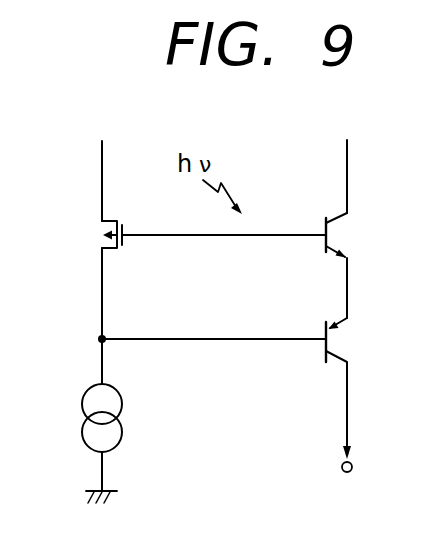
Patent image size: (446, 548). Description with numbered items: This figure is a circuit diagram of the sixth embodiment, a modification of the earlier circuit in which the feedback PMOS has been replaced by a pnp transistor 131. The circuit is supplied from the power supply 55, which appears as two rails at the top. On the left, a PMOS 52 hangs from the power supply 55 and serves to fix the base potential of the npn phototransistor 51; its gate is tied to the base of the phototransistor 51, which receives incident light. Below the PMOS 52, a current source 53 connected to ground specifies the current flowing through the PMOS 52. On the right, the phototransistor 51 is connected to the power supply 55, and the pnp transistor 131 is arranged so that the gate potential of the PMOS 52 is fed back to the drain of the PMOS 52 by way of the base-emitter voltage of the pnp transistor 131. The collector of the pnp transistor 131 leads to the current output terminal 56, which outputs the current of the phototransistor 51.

The power supply 55 is at (114, 141).
The PMOS 52 is at (95, 218).
The current source 53 is at (88, 388).
The npn phototransistor 51 is at (352, 222).
The pnp transistor 131 is at (352, 325).
The current output terminal 56 is at (356, 466).